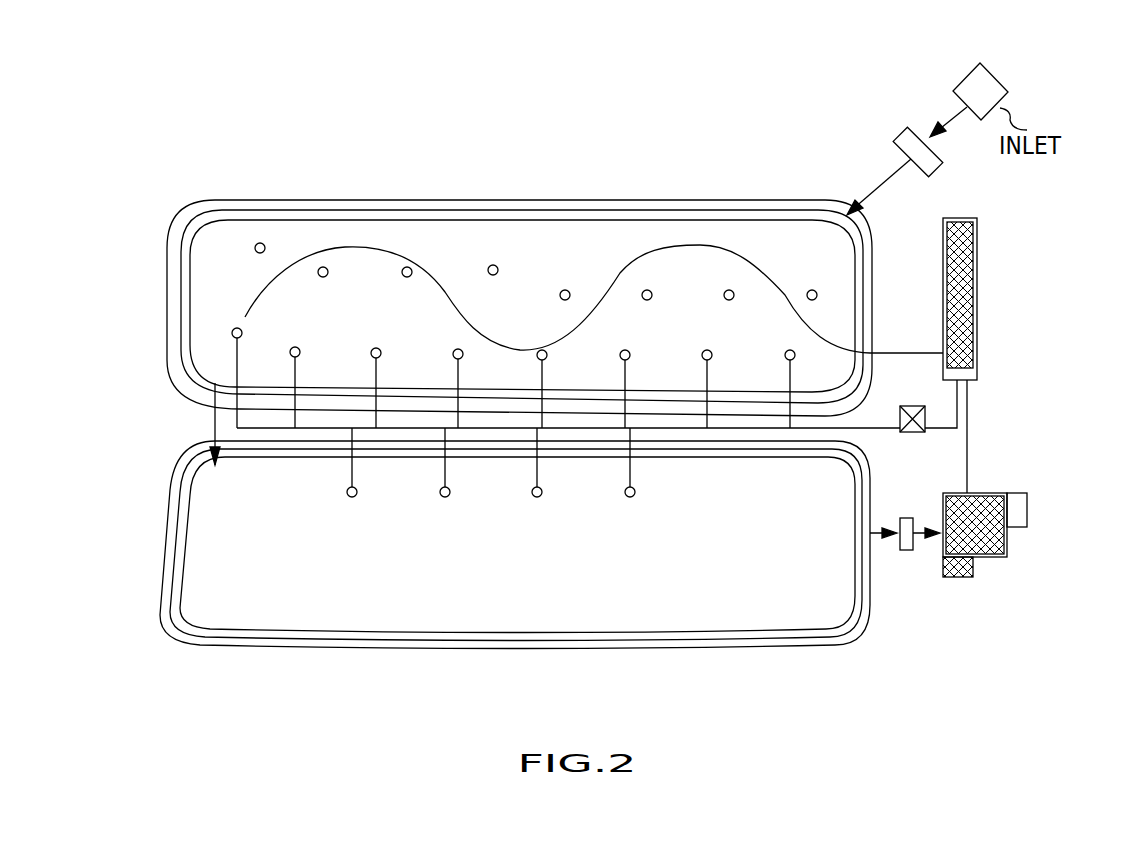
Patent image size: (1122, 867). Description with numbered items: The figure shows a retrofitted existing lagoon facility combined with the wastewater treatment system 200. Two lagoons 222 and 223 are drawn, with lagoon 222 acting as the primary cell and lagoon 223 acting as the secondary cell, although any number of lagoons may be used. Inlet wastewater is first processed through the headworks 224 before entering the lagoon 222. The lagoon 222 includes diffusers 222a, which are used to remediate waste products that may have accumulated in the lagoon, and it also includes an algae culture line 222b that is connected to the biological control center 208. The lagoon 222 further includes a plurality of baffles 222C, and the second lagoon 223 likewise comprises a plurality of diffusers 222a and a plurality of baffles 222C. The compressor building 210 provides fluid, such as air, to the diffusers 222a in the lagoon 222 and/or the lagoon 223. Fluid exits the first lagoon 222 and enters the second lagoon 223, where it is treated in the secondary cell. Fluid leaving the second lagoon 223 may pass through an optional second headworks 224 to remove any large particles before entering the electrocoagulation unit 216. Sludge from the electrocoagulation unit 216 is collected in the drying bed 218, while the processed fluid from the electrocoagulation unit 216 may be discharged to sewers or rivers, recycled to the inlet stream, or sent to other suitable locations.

The wastewater treatment system 200 is at (848, 106).
The biological control center 208 is at (958, 236).
The compressor building 210 is at (927, 419).
The electrocoagulation unit 216 is at (958, 577).
The drying bed 218 is at (1027, 510).
The lagoon 222 is at (877, 247).
The diffusers 222a is at (493, 266).
The algae culture line 222b is at (768, 267).
The baffles 222C is at (342, 390).
The lagoon 223 is at (727, 622).
The headworks 224 is at (903, 128).